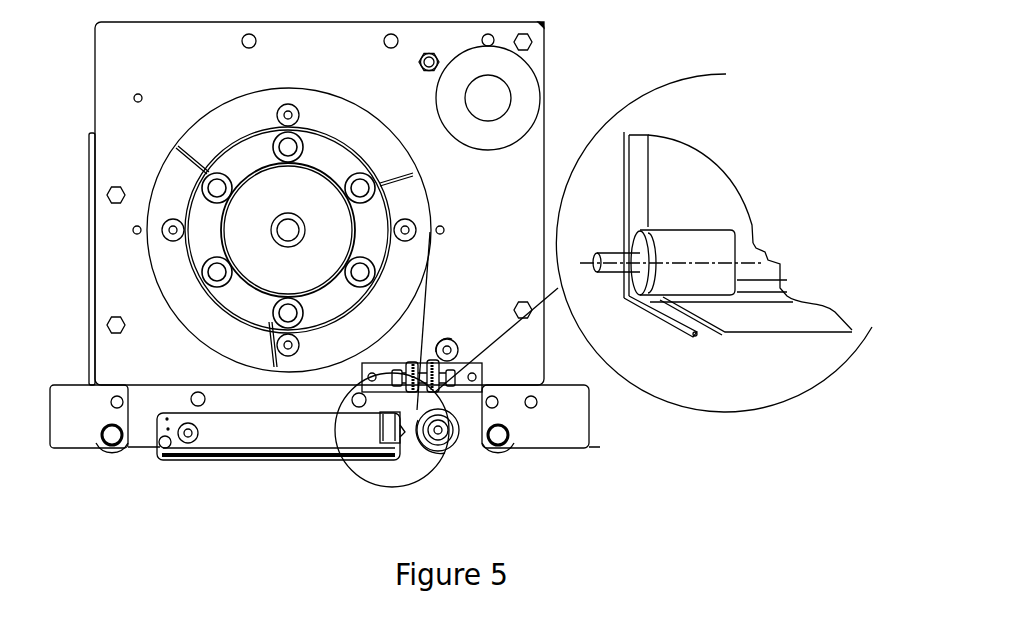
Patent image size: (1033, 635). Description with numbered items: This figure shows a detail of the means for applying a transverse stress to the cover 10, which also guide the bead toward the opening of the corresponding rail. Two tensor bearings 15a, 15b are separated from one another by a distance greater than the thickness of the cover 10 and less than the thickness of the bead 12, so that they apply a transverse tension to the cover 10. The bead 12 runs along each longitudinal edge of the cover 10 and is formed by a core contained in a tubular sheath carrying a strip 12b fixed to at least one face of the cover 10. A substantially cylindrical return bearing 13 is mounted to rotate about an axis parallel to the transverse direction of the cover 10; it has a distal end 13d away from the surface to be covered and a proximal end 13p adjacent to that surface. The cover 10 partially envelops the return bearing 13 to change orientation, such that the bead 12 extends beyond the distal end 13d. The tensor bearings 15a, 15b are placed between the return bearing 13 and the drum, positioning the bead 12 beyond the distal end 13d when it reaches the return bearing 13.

The cover 10 is at (427, 302).
The bead 12 is at (695, 336).
The strip 12b is at (638, 148).
The return bearing 13 is at (450, 452).
The distal end 13d is at (637, 280).
The proximal end 13p is at (738, 242).
The tensor bearing 15a is at (435, 360).
The tensor bearing 15b is at (460, 362).